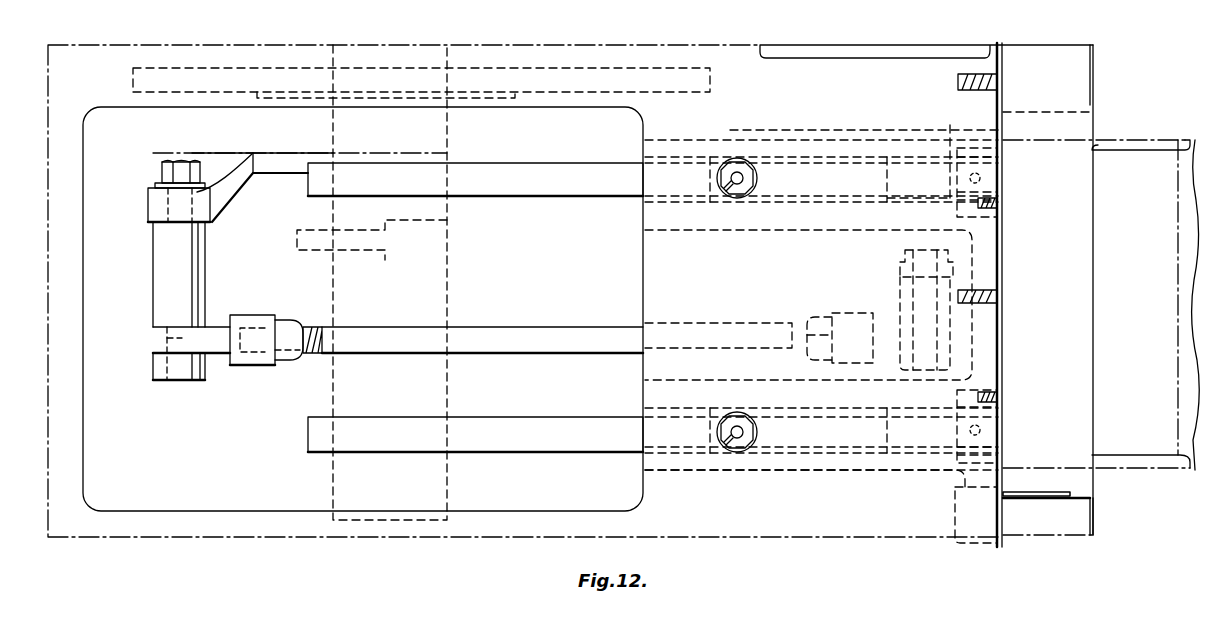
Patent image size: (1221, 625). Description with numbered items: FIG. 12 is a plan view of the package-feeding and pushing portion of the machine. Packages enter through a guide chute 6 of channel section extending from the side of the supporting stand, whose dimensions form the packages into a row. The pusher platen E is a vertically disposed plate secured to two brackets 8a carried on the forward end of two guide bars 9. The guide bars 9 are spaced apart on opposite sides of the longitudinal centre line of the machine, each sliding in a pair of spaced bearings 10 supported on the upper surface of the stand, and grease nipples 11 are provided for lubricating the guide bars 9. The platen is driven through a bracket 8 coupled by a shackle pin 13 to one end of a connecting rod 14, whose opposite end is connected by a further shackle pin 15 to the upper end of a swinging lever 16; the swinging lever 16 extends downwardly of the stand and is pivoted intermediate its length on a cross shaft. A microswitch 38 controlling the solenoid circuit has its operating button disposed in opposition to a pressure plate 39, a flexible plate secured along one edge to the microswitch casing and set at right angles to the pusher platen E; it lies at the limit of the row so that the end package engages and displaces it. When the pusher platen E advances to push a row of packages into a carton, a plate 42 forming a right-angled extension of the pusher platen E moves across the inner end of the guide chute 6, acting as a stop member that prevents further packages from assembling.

The guide chute 6 is at (1090, 58).
The bracket 8 is at (1000, 300).
The brackets 8a is at (998, 212).
The guide bars 9 is at (475, 307).
The bearings 10 is at (692, 157).
The grease nipples 11 is at (737, 198).
The shackle pin 13 is at (915, 320).
The connecting rod 14 is at (398, 340).
The shackle pin 15 is at (152, 337).
The swinging lever 16 is at (287, 166).
The microswitch 38 is at (1048, 518).
The pressure plate 39 is at (1018, 491).
The plate 42 is at (882, 130).
The pusher platen E is at (1003, 236).